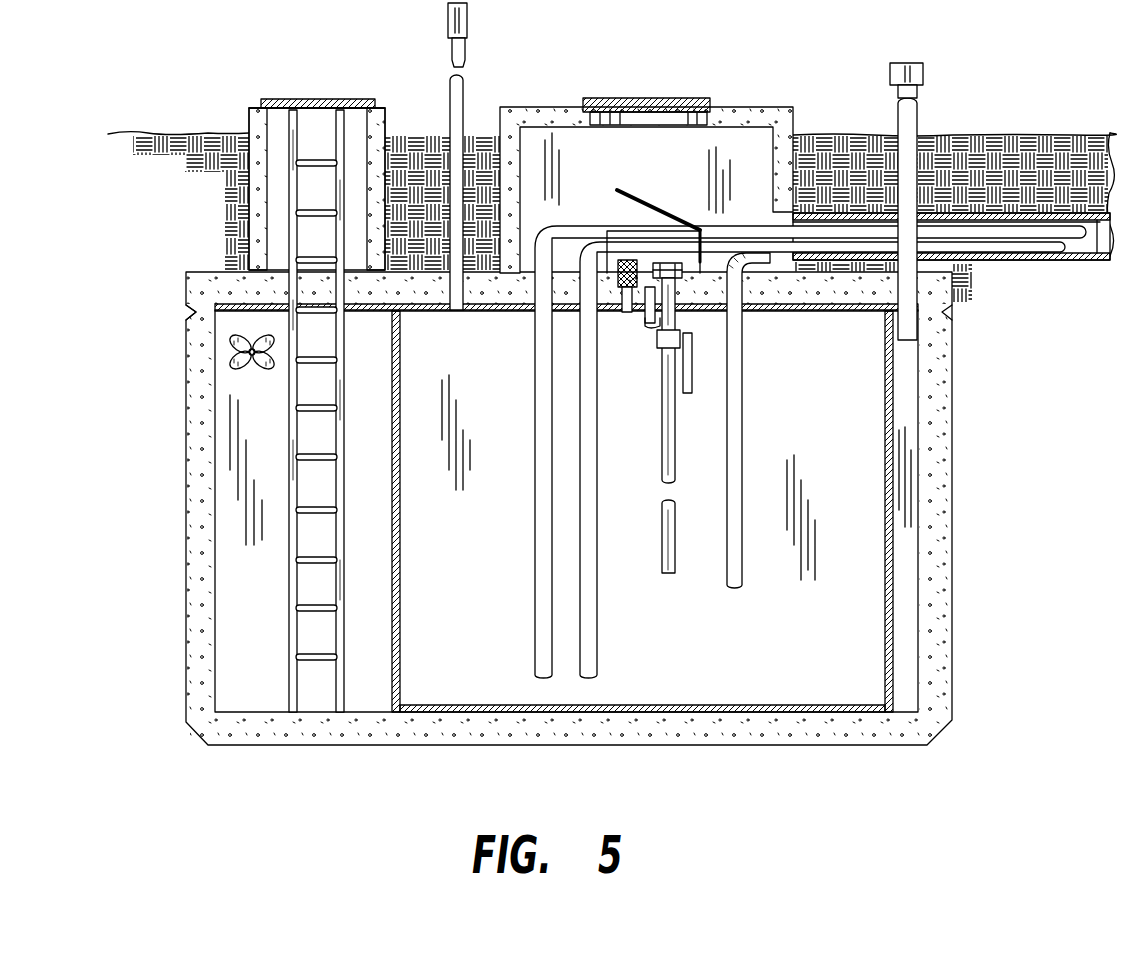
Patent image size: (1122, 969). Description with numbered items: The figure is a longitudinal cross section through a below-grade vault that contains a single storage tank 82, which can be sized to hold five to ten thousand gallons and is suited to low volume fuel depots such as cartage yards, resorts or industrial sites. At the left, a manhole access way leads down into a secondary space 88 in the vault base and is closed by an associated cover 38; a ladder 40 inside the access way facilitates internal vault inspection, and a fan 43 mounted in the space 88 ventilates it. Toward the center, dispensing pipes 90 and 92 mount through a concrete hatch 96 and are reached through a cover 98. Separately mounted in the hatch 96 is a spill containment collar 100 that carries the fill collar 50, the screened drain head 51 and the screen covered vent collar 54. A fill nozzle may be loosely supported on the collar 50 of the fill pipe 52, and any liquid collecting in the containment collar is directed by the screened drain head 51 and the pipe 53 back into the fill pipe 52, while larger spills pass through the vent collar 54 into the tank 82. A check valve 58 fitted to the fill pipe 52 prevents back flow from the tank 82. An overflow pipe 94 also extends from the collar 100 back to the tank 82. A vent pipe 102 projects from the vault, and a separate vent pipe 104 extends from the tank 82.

The cover 38 is at (288, 100).
The ladder 40 is at (292, 443).
The fan 43 is at (240, 350).
The fill collar 50 is at (670, 263).
The screened drain head 51 is at (643, 285).
The fill pipe 52 is at (660, 442).
The drain pipe 53 is at (648, 325).
The screen covered vent collar 54 is at (622, 262).
The check valve 58 is at (691, 393).
The storage tank 82 is at (868, 638).
The secondary space 88 is at (233, 637).
The dispensing pipe 90 is at (742, 381).
The dispensing pipe 92 is at (535, 578).
The overflow pipe 94 is at (597, 628).
The concrete hatch 96 is at (740, 107).
The cover 98 is at (620, 98).
The spill containment collar 100 is at (700, 257).
The vault vent pipe 102 is at (918, 112).
The tank vent pipe 104 is at (465, 50).